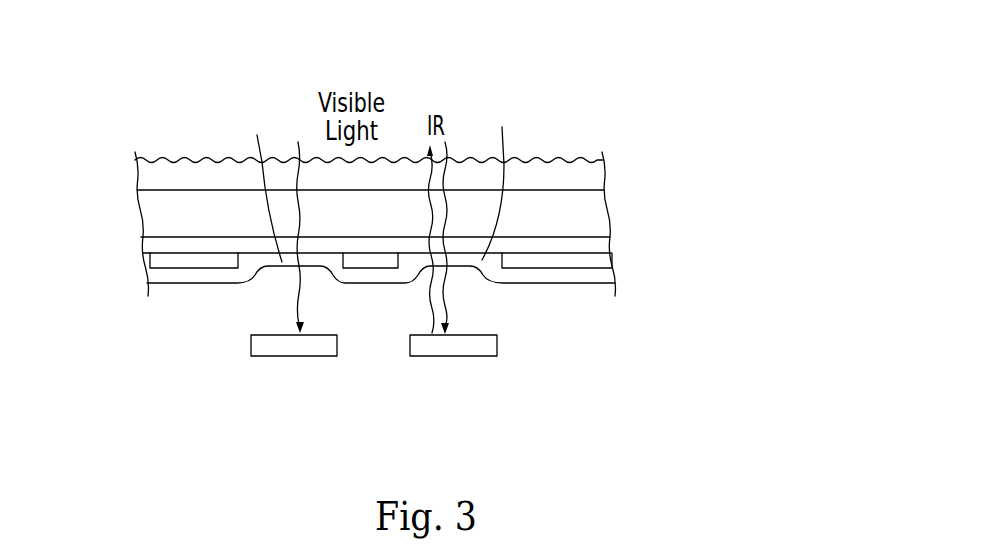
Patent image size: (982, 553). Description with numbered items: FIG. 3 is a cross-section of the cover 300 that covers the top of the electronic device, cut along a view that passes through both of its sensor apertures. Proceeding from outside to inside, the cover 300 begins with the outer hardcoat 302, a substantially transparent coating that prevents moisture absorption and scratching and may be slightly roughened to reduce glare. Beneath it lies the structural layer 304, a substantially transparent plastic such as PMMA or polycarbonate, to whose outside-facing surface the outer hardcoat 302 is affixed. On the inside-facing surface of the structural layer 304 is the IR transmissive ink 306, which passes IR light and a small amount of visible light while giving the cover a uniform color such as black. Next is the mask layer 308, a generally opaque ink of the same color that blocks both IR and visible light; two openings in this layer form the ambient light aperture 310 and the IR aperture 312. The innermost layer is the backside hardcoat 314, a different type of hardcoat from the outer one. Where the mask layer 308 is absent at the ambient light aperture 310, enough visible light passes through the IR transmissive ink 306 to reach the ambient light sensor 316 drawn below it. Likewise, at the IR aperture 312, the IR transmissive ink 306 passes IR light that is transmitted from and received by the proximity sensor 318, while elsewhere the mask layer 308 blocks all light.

The cover 300 is at (133, 227).
The outer hardcoat 302 is at (583, 178).
The structural layer 304 is at (585, 217).
The IR transmissive ink 306 is at (590, 246).
The mask layer 308 is at (590, 260).
The ambient light aperture 310 is at (249, 140).
The IR aperture 312 is at (503, 150).
The backside hardcoat 314 is at (600, 276).
The ambient light sensor 316 is at (294, 408).
The proximity sensor 318 is at (453, 393).